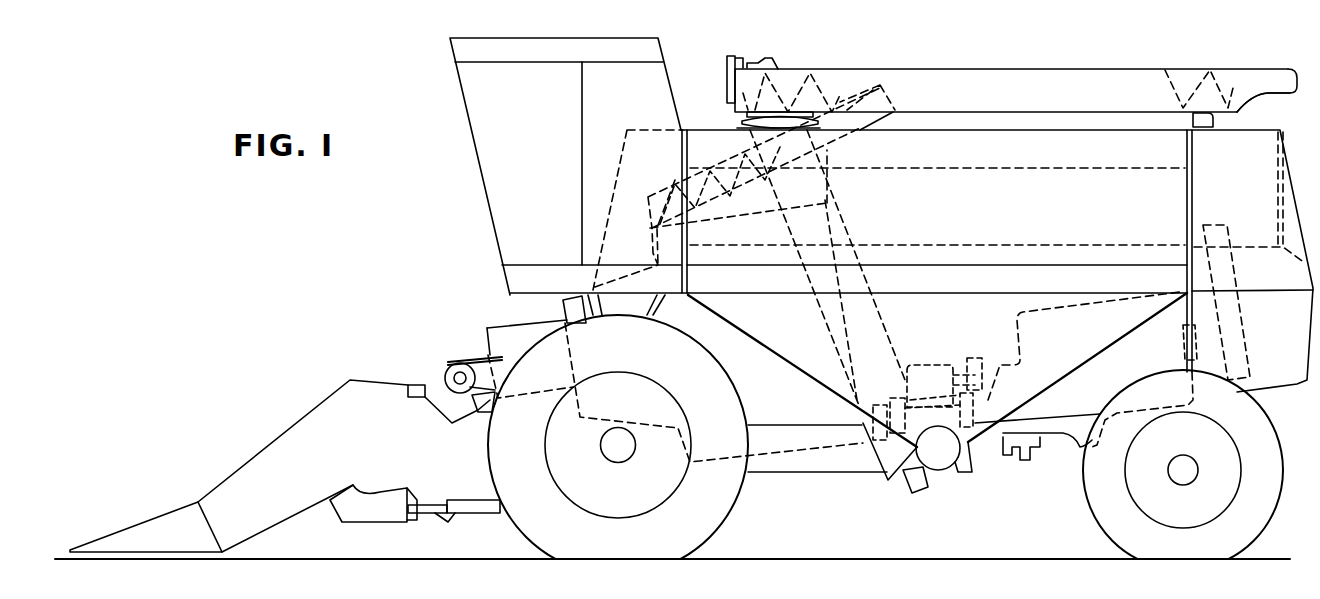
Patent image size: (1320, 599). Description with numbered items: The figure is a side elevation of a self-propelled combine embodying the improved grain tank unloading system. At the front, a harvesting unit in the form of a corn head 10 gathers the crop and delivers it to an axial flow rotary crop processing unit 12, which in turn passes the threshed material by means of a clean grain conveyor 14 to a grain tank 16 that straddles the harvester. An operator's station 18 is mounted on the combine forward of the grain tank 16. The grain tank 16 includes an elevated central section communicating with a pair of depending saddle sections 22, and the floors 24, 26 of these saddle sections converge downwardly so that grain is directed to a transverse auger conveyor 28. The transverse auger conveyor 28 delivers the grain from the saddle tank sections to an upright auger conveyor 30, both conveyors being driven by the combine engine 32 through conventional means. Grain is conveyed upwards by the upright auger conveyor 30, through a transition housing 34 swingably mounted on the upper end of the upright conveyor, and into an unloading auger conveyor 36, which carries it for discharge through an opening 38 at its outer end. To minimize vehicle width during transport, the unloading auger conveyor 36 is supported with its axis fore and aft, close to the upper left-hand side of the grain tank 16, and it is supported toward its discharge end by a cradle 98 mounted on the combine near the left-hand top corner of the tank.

The corn head 10 is at (288, 433).
The axial flow rotary crop processing unit 12 is at (579, 298).
The clean grain conveyor 14 is at (668, 186).
The grain tank 16 is at (991, 127).
The operator's station 18 is at (475, 146).
The saddle sections 22 is at (944, 337).
The floor 24 is at (760, 345).
The floor 26 is at (1098, 351).
The transverse auger conveyor 28 is at (958, 467).
The upright auger conveyor 30 is at (848, 214).
The combine engine 32 is at (1015, 331).
The transition housing 34 is at (730, 54).
The unloading auger conveyor 36 is at (1041, 67).
The opening 38 is at (1268, 93).
The cradle 98 is at (1213, 126).